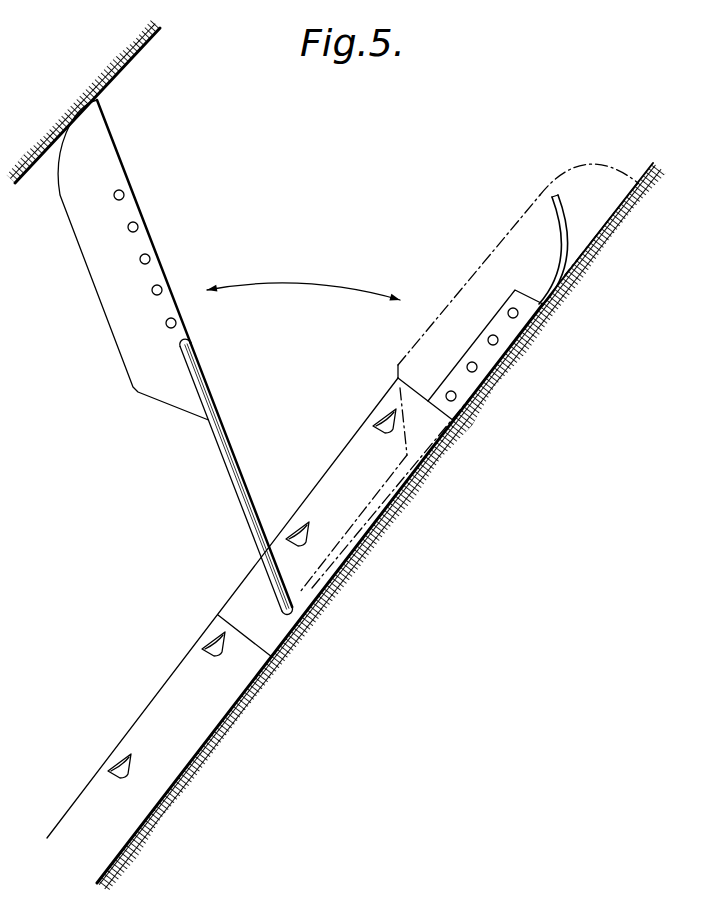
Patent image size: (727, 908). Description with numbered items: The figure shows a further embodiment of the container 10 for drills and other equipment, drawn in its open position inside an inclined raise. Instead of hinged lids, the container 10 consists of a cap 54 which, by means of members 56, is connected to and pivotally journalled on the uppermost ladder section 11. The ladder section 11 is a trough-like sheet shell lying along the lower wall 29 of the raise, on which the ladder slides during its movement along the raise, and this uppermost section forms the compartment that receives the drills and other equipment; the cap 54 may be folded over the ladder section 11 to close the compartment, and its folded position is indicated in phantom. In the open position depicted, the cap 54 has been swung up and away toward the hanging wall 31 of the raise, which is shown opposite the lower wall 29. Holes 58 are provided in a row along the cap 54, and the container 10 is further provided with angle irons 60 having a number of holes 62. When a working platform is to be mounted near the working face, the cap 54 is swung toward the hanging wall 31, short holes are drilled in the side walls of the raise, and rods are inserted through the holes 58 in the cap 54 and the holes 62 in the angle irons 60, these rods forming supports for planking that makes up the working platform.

The container 10 is at (568, 212).
The ladder section 11 is at (258, 582).
The lower wall 29 is at (653, 163).
The hanging wall 31 is at (136, 54).
The cap 54 is at (110, 162).
The members 56 is at (226, 440).
The holes 58 is at (139, 224).
The angle irons 60 is at (502, 330).
The holes 62 is at (456, 395).